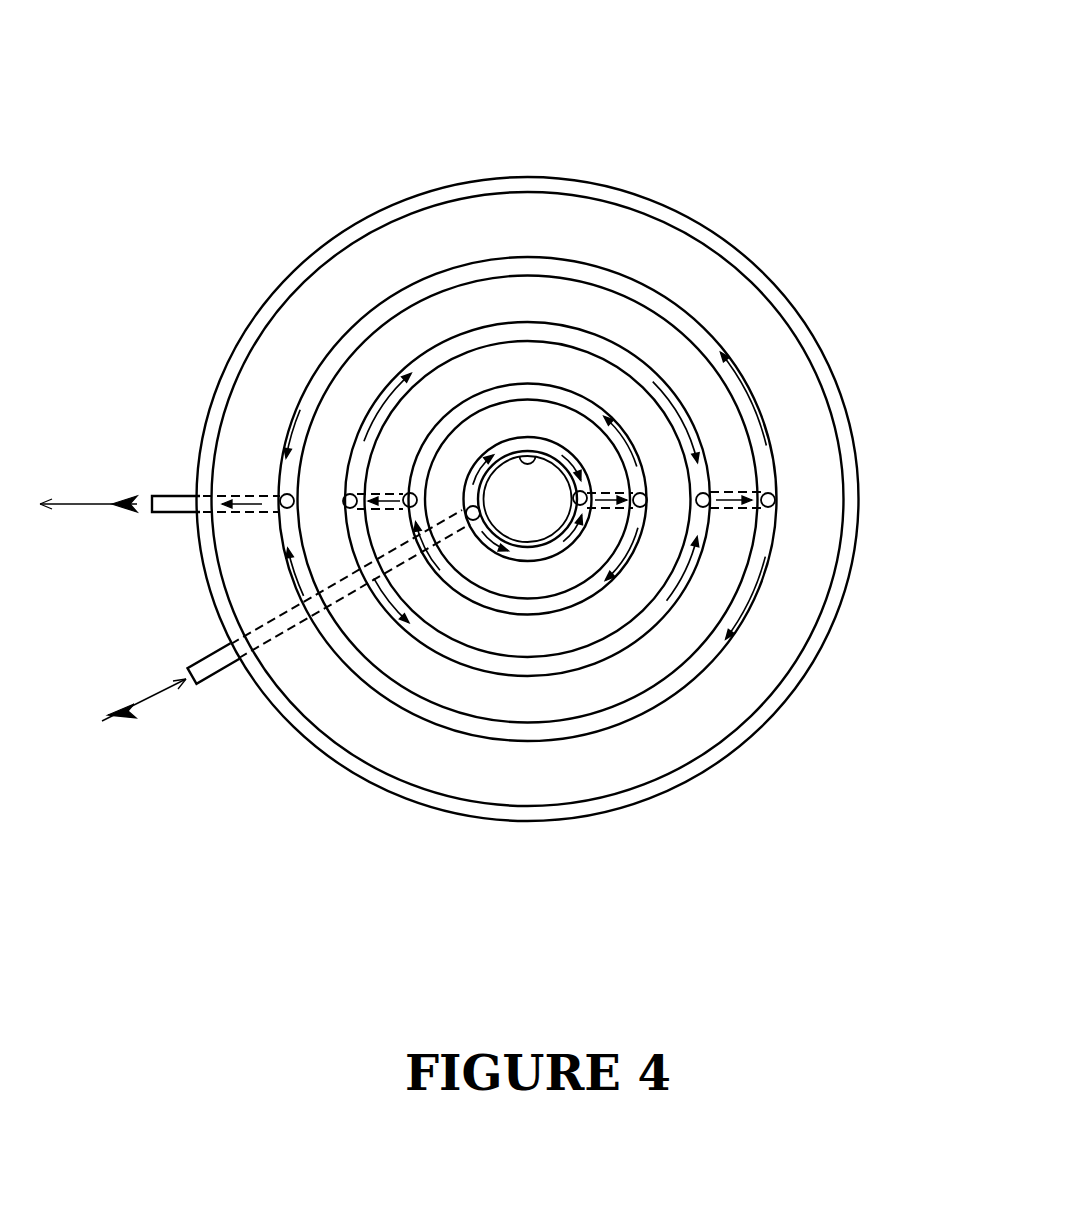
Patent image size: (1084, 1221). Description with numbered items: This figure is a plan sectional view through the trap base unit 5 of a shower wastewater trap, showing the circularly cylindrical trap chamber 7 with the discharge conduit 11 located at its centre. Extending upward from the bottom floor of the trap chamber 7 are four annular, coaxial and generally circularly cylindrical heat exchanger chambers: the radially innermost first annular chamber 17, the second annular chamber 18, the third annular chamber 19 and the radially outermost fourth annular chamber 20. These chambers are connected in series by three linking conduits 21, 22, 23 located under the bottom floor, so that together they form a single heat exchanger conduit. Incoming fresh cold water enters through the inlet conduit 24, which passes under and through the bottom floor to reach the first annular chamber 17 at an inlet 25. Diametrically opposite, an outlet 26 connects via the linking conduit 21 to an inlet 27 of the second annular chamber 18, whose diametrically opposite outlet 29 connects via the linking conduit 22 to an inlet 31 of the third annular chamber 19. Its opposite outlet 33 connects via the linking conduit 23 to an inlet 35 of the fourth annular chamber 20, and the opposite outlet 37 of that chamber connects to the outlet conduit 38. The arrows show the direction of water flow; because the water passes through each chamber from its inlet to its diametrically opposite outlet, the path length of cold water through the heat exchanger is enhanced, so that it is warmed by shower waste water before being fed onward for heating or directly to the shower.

The trap base unit 5 is at (814, 660).
The trap chamber 7 is at (680, 356).
The discharge conduit 11 is at (515, 455).
The first annular chamber 17 is at (545, 447).
The second annular chamber 18 is at (547, 388).
The third annular chamber 19 is at (535, 323).
The fourth annular chamber 20 is at (513, 262).
The linking conduit 21 is at (612, 513).
The linking conduit 22 is at (390, 490).
The linking conduit 23 is at (737, 488).
The inlet conduit 24 is at (215, 685).
The inlet 25 is at (472, 520).
The outlet 26 is at (582, 512).
The inlet 27 is at (643, 508).
The outlet 29 is at (406, 495).
The inlet 31 is at (346, 496).
The outlet 33 is at (707, 507).
The inlet 35 is at (775, 508).
The outlet 37 is at (283, 496).
The outlet conduit 38 is at (152, 496).